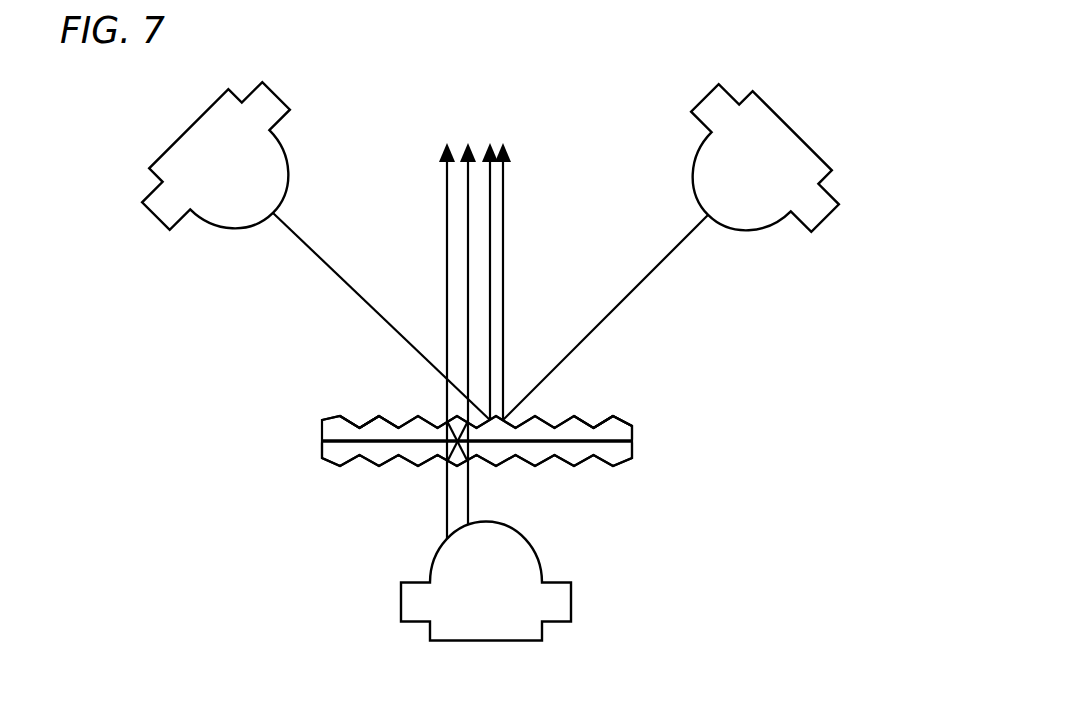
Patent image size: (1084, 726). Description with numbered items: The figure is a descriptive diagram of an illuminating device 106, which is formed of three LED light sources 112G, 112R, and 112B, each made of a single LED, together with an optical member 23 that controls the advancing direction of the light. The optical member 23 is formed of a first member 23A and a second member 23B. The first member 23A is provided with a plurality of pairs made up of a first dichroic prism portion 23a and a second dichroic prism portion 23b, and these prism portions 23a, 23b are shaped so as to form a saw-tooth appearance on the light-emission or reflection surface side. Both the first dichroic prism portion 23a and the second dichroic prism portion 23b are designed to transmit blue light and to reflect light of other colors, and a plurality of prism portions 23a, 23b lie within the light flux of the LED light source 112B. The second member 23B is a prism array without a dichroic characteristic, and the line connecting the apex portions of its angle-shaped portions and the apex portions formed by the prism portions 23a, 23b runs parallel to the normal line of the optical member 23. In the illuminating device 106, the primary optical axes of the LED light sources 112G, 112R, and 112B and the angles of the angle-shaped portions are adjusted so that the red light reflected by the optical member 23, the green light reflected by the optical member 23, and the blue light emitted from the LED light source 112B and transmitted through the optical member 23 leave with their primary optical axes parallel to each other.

The illuminating device 106 is at (876, 303).
The LED light source 112G is at (158, 134).
The LED light source 112R is at (838, 137).
The LED light source 112B is at (601, 581).
The optical member 23 is at (691, 419).
The first member 23A is at (322, 431).
The second member 23B is at (322, 451).
The first dichroic prism portion 23a is at (364, 421).
The second dichroic prism portion 23b is at (390, 421).